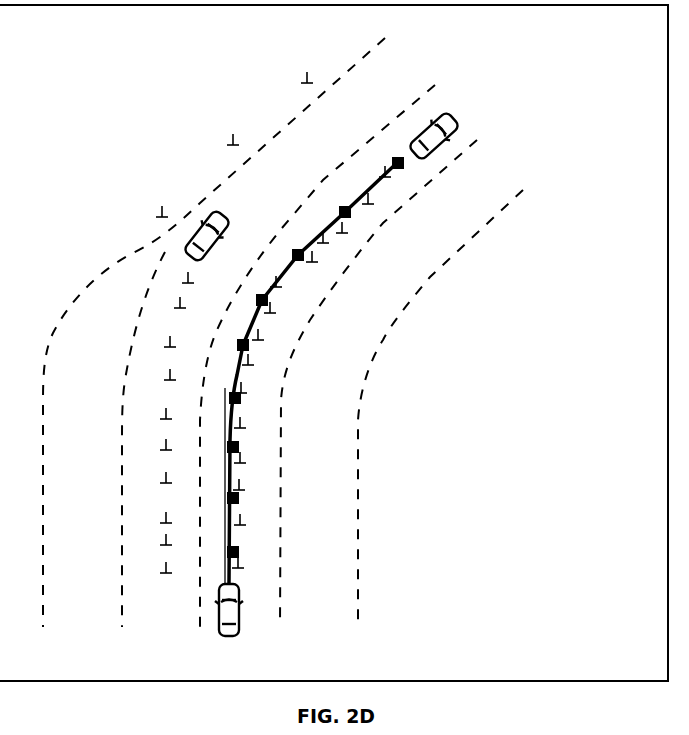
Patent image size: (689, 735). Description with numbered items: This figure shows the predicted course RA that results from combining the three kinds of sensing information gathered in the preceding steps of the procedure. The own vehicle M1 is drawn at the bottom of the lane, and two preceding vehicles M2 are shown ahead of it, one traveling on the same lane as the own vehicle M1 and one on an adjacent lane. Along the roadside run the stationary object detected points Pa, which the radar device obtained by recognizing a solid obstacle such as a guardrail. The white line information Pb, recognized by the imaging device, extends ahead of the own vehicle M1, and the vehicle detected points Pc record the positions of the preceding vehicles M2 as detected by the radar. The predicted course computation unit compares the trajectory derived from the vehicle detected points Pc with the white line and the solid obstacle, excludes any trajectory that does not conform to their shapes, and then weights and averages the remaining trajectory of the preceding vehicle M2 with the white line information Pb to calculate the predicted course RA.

The stationary object detected points Pa is at (302, 74).
The white line information Pb is at (224, 427).
The vehicle detected points Pc is at (323, 242).
The predicted course RA is at (258, 315).
The own vehicle M1 is at (219, 622).
The preceding vehicle M2 is at (217, 207).